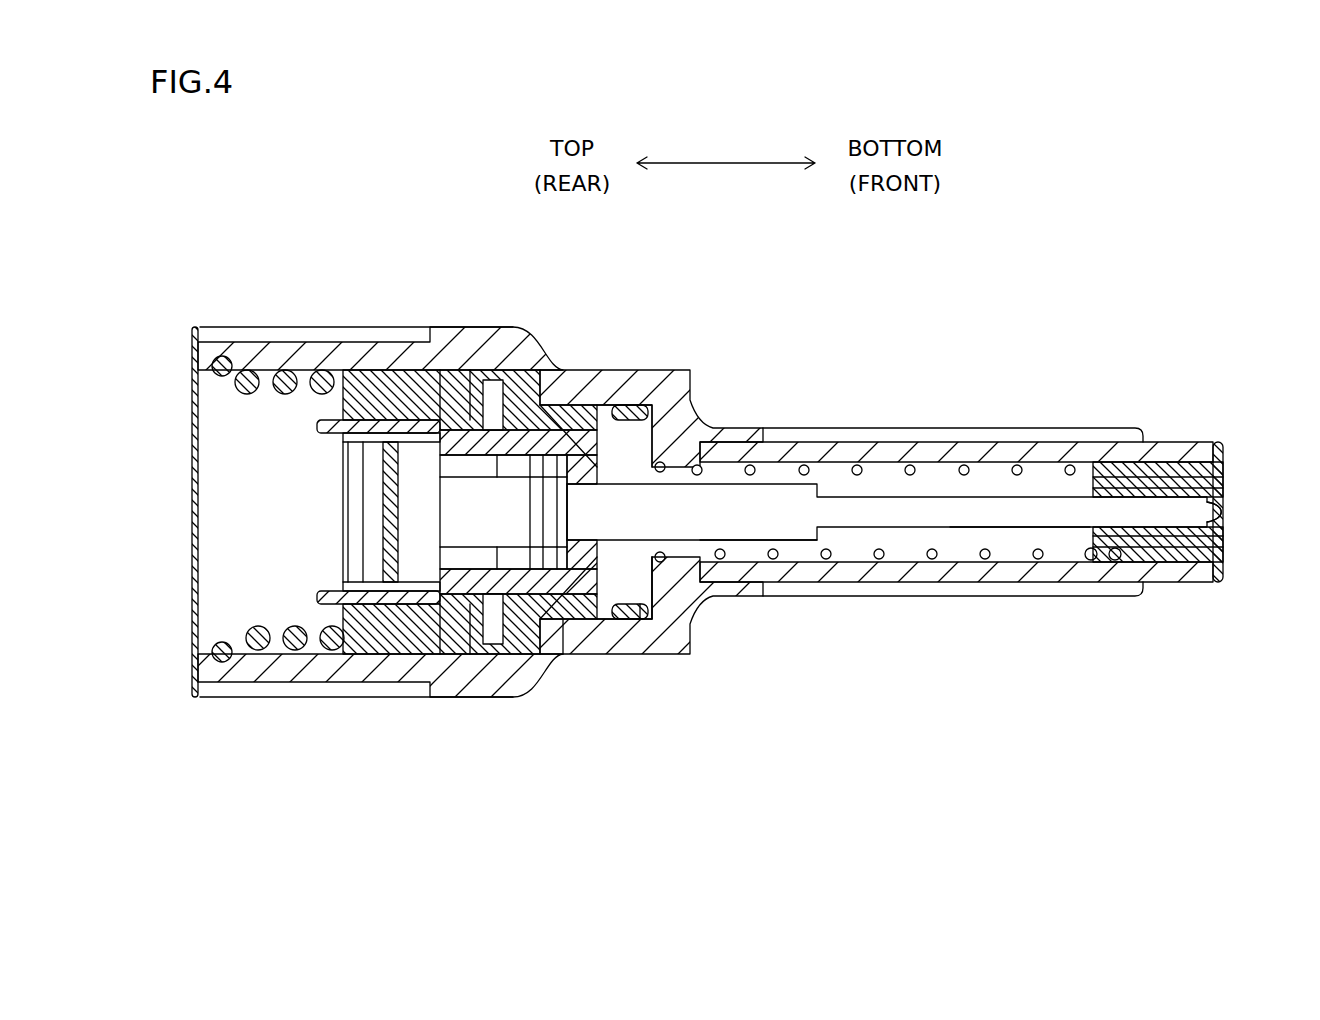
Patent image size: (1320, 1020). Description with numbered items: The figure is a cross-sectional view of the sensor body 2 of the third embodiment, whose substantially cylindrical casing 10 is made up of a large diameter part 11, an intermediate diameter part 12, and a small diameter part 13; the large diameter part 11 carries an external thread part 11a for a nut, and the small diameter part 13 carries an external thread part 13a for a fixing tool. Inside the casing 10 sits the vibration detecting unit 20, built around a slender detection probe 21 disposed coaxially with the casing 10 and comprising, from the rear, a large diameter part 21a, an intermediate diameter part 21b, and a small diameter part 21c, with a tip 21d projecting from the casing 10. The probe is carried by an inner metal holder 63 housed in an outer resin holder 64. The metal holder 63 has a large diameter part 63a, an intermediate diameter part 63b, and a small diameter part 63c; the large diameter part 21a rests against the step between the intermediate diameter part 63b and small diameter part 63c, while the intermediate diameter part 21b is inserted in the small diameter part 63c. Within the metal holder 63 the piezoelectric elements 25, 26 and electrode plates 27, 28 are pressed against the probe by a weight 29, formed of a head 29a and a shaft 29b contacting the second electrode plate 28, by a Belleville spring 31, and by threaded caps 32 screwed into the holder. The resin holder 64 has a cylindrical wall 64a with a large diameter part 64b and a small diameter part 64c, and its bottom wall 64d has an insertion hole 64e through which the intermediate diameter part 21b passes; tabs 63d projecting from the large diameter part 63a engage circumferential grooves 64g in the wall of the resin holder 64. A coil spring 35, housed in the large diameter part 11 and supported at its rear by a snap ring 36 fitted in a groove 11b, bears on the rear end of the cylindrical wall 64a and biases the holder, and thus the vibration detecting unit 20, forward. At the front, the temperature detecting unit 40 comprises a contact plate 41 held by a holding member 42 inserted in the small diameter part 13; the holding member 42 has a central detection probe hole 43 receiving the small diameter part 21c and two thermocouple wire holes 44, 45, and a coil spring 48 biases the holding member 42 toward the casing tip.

The sensor body 2 is at (860, 293).
The casing 10 is at (665, 370).
The large diameter part 11 is at (373, 345).
The external thread part 11a is at (262, 330).
The groove 11b is at (192, 376).
The intermediate diameter part 12 is at (640, 400).
The small diameter part 13 is at (957, 442).
The external thread part 13a is at (1028, 428).
The vibration detecting unit 20 is at (323, 627).
The detection probe 21 is at (913, 528).
The large diameter part 21a is at (563, 528).
The intermediate diameter part 21b is at (752, 600).
The small diameter part 21c is at (1017, 514).
The tip 21d is at (1238, 512).
The piezoelectric element 25 is at (586, 400).
The piezoelectric element 26 is at (550, 400).
The electrode plate 27 is at (539, 652).
The second electrode plate 28 is at (509, 652).
The weight 29 is at (445, 768).
The head 29a is at (358, 697).
The shaft 29b is at (421, 697).
The Belleville spring 31 is at (373, 523).
The caps 32 is at (353, 486).
The coil spring 35 is at (338, 404).
The snap ring 36 is at (210, 650).
The temperature detecting unit 40 is at (1233, 472).
The contact plate 41 is at (1232, 537).
The holding member 42 is at (1152, 462).
The detection probe hole 43 is at (1162, 582).
The thermocouple wire hole 44 is at (1202, 462).
The thermocouple wire hole 45 is at (1132, 572).
The coil spring 48 is at (850, 588).
The metal holder 63 is at (346, 335).
The large diameter part 63a is at (421, 372).
The intermediate diameter part 63b is at (528, 375).
The small diameter part 63c is at (575, 645).
The tabs 63d is at (450, 378).
The resin holder 64 is at (700, 427).
The cylindrical wall 64a is at (276, 392).
The large diameter part 64b is at (313, 680).
The small diameter part 64c is at (567, 662).
The bottom wall 64d is at (643, 657).
The insertion hole 64e is at (673, 652).
The circumferential grooves 64g is at (475, 376).